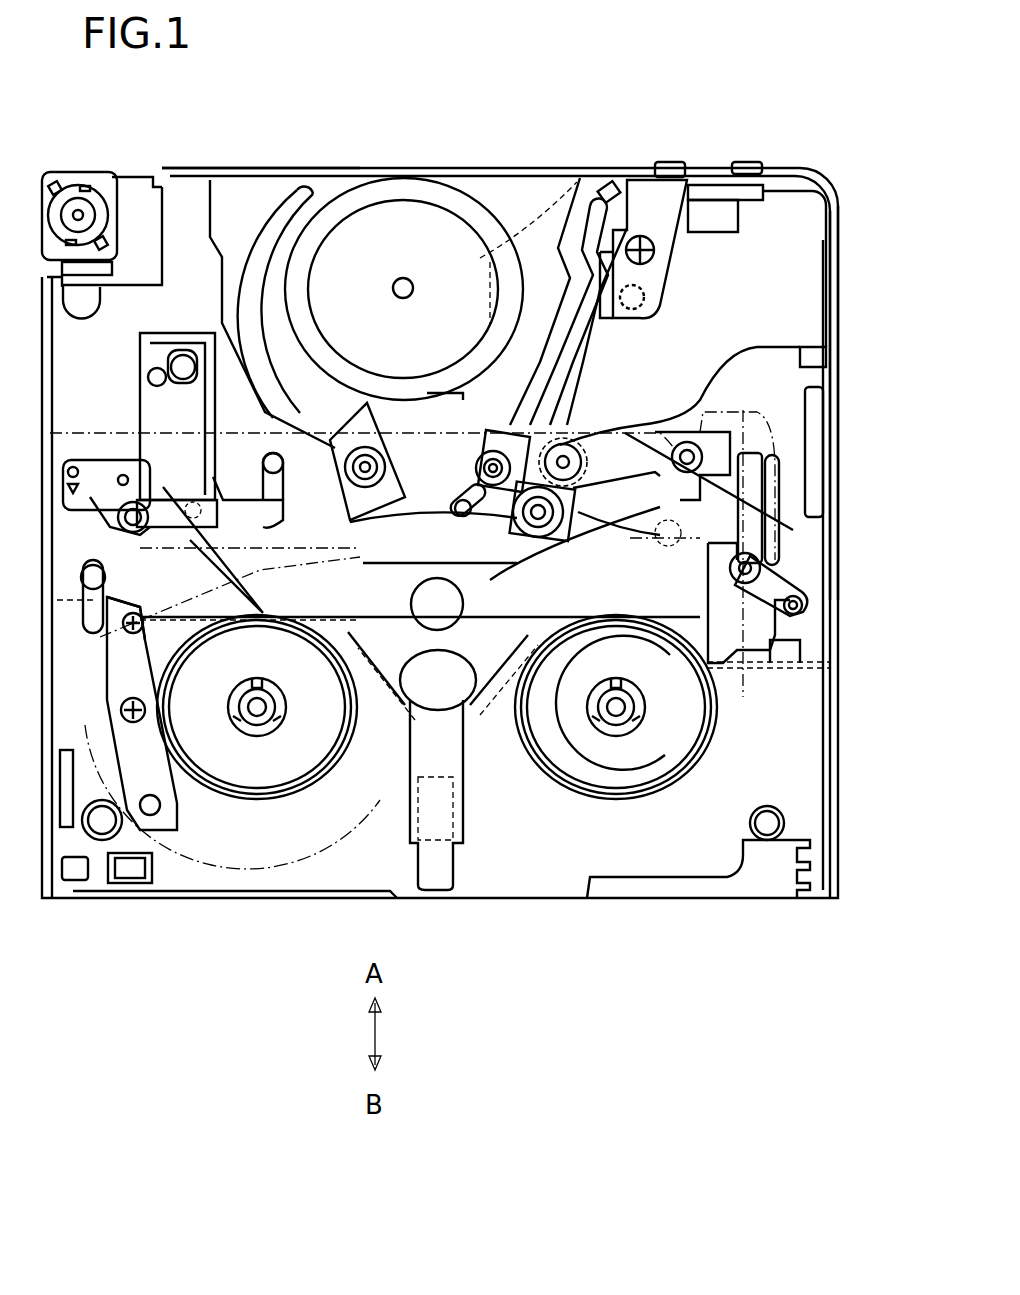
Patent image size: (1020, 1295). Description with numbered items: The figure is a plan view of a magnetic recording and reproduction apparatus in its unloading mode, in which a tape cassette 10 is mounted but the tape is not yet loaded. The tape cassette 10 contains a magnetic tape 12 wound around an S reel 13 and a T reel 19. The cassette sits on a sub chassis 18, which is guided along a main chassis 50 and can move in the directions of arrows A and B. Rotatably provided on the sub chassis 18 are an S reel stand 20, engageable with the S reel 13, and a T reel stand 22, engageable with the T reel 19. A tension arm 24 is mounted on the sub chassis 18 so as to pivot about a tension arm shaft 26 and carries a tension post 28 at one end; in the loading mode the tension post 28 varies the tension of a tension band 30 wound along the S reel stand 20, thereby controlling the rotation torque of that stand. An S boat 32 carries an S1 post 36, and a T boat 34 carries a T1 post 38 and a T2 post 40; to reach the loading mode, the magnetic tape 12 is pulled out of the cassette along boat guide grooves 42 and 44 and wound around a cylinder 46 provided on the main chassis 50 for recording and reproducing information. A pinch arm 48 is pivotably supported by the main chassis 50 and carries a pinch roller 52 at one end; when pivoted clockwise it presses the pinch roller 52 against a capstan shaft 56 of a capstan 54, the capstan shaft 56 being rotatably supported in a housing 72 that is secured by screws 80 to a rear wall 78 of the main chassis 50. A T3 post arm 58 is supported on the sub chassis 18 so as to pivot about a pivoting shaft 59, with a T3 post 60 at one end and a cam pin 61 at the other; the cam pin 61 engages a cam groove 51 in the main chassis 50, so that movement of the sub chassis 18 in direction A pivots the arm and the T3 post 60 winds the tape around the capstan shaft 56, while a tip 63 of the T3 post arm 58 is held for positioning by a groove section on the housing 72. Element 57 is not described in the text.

The tape cassette 10 is at (740, 420).
The magnetic tape 12 is at (247, 440).
The S reel 13 is at (250, 847).
The sub chassis 18 is at (693, 863).
The T reel 19 is at (607, 760).
The S reel stand 20 is at (293, 760).
The T reel stand 22 is at (708, 753).
The tension arm 24 is at (277, 498).
The tension arm shaft 26 is at (122, 478).
The tension post 28 is at (277, 467).
The tension band 30 is at (217, 573).
The S boat 32 is at (388, 490).
The T boat 34 is at (490, 507).
The S1 post 36 is at (377, 443).
The T1 post 38 is at (453, 520).
The T2 post 40 is at (482, 446).
The boat guide groove 42 is at (292, 185).
The boat guide groove 44 is at (592, 205).
The cylinder 46 is at (395, 182).
The pinch arm 48 is at (603, 493).
The main chassis 50 is at (178, 183).
The cam groove 51 is at (72, 180).
The pinch roller 52 is at (540, 537).
The capstan 54 is at (800, 237).
The capstan shaft 56 is at (632, 305).
The link 57 is at (770, 505).
The T3 post arm 58 is at (770, 529).
The pivoting shaft 59 is at (727, 610).
The T3 post 60 is at (560, 447).
The cam pin 61 is at (810, 603).
The tip 63 is at (583, 447).
The housing 72 is at (793, 303).
The rear wall 78 is at (533, 167).
The screws 80 is at (663, 160).